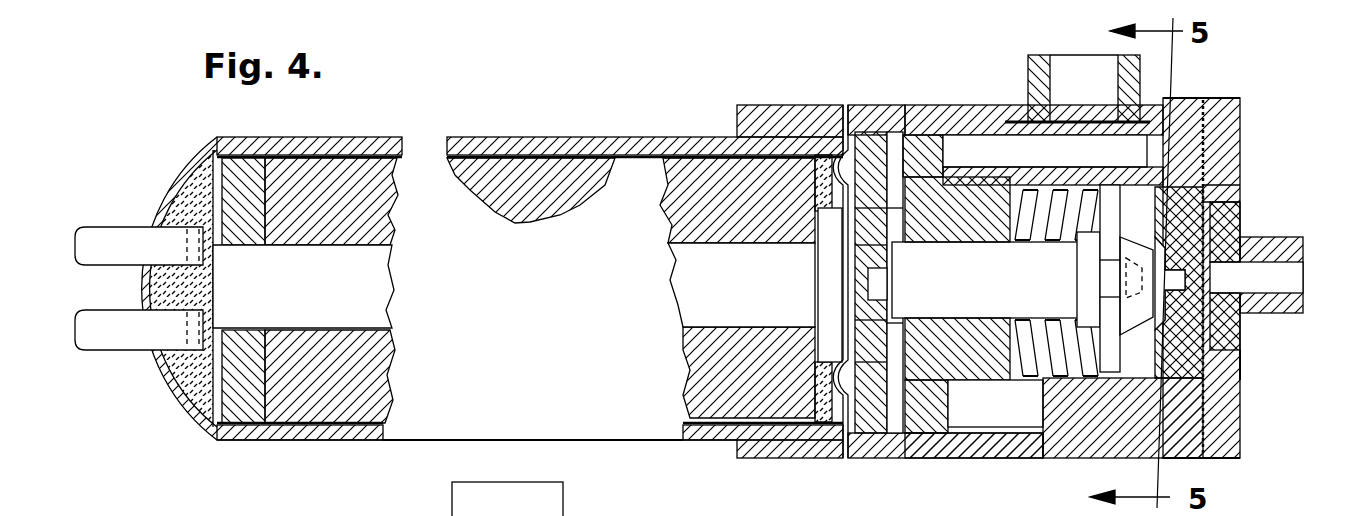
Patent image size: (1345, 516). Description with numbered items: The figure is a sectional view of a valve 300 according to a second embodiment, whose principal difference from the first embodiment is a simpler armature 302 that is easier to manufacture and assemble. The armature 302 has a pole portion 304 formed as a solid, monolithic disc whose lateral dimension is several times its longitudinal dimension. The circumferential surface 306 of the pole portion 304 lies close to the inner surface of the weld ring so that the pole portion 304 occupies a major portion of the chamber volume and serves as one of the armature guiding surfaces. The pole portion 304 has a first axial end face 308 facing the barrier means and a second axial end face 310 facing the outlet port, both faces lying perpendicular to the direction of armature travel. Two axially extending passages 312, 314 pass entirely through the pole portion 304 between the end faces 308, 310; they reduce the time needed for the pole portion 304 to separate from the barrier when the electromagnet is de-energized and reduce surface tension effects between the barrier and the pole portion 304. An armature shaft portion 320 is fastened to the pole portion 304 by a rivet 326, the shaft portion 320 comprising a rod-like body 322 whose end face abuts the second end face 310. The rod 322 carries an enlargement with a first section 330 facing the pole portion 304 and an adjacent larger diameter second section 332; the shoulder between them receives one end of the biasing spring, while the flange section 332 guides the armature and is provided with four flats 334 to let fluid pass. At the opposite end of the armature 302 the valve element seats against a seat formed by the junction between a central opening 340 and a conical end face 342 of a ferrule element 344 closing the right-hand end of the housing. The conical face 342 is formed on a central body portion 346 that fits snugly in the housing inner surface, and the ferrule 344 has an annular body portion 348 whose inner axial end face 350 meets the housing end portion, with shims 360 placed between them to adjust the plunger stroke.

The valve 300 is at (698, 100).
The armature 302 is at (893, 130).
The pole portion 304 is at (878, 460).
The circumferential surface 306 is at (856, 460).
The first axial end face 308 is at (862, 455).
The passage 312 is at (893, 200).
The second axial end face 310 is at (895, 410).
The rivet 326 is at (888, 290).
The rod-like body 322 is at (978, 270).
The passage 314 is at (975, 378).
The armature shaft portion 320 is at (975, 385).
The second section 332 is at (1082, 166).
The first section 330 is at (1060, 215).
The flat 334 is at (1108, 184).
The conical end face 342 is at (1240, 345).
The shim 360 is at (1206, 100).
The inner axial end face 350 is at (1240, 112).
The annular body portion 348 is at (1215, 185).
The central opening 340 is at (1185, 280).
The central body portion 346 is at (1220, 230).
The ferrule element 344 is at (1246, 378).